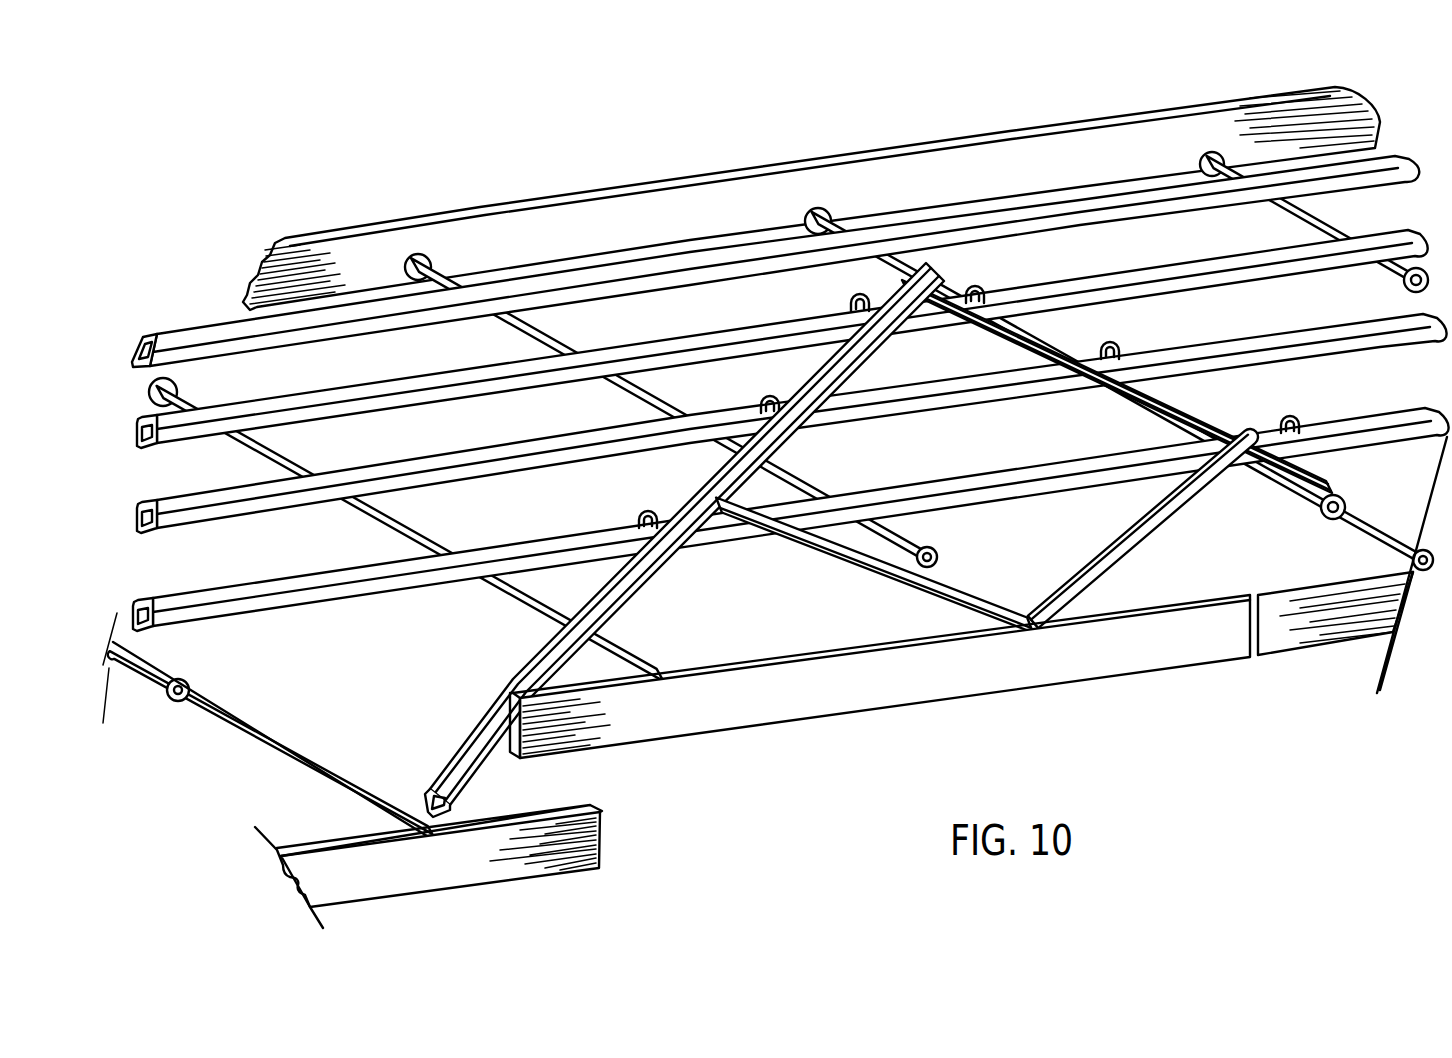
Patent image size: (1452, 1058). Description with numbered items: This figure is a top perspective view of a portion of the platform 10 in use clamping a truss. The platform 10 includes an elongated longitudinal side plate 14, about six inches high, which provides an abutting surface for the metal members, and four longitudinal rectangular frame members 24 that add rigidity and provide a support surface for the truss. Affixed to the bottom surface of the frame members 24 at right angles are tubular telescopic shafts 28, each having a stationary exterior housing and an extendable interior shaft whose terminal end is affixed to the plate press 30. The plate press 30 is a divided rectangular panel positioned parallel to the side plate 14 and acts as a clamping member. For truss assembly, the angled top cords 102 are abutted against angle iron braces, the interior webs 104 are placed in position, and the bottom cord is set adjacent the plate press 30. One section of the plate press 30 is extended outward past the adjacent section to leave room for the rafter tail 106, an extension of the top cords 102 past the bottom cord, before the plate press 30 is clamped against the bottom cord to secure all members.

The platform 10 is at (846, 158).
The longitudinal side plate 14 is at (547, 197).
The longitudinal rectangular frame members 24 is at (313, 328).
The tubular telescopic shafts 28 is at (1210, 153).
The plate press 30 is at (603, 843).
The top cords 102 is at (1053, 343).
The interior webs 104 is at (827, 555).
The rafter tails 106 is at (453, 760).